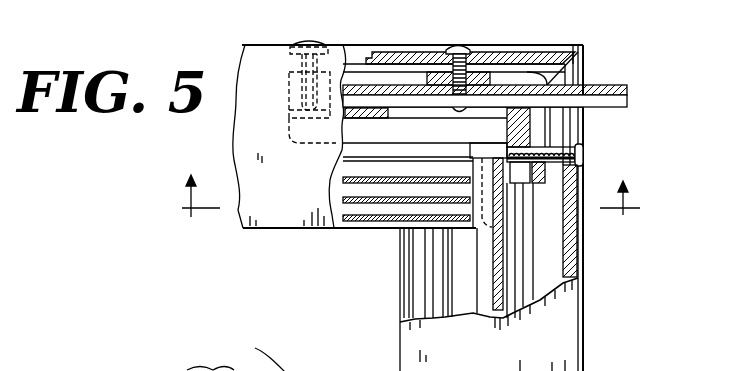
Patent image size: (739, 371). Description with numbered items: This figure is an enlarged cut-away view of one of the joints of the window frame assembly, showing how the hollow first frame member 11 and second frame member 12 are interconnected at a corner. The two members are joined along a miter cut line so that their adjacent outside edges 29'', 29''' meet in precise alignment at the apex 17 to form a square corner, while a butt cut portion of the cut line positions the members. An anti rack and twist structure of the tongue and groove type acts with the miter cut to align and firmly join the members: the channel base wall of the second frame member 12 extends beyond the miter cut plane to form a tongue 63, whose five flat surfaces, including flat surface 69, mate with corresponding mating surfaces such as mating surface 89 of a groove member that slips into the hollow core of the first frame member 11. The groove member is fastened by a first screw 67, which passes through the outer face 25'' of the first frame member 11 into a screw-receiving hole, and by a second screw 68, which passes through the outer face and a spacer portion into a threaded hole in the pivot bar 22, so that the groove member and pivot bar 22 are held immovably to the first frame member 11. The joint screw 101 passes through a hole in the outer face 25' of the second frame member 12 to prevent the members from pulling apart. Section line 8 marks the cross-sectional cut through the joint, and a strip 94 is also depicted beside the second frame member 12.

The section line 8- 8 is at (404, 193).
The first frame member 11 is at (344, 45).
The second frame member 12 is at (583, 326).
The apex 17 is at (581, 47).
The pivot bar 22 is at (628, 96).
The outer face of second frame member 25' is at (570, 136).
The outer face of first frame member 25'' is at (470, 38).
The outside edge of first frame member 29'' is at (565, 47).
The outside edge of second frame member 29''' is at (610, 52).
The tongue 63 is at (492, 216).
The first screw 67 is at (310, 44).
The second screw 68 is at (236, 359).
The flat surface of tongue 69 is at (463, 45).
The mating surface 89 is at (288, 88).
The strip 94 is at (523, 218).
The joint screw 101 is at (583, 155).